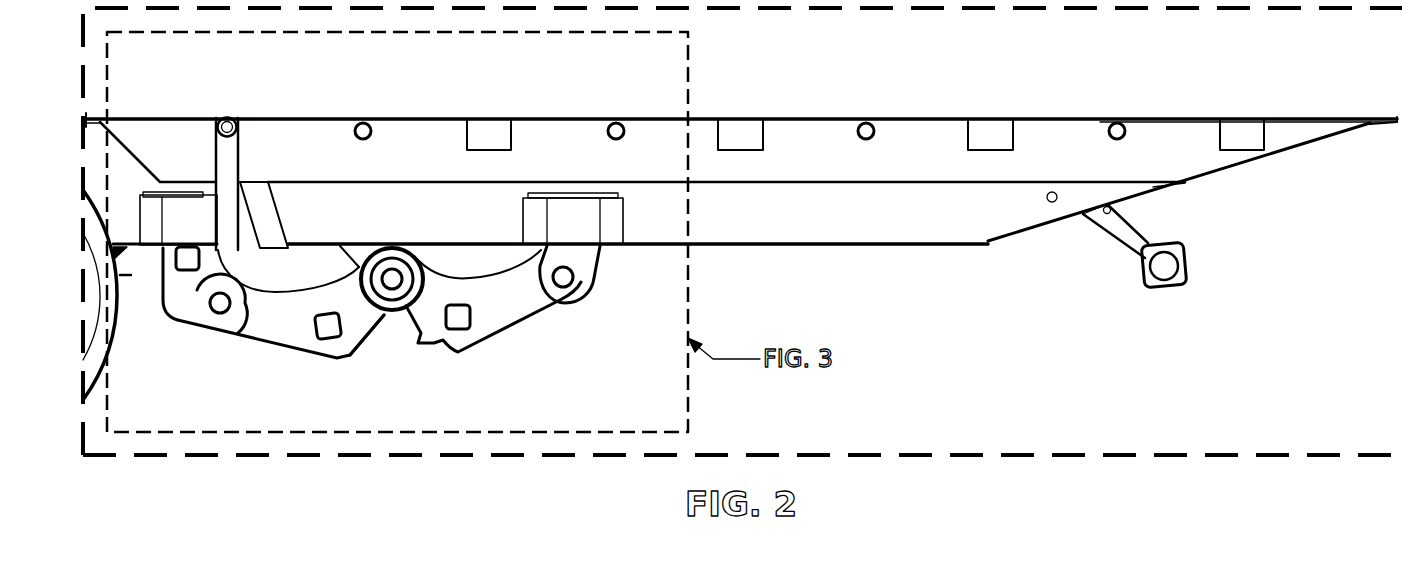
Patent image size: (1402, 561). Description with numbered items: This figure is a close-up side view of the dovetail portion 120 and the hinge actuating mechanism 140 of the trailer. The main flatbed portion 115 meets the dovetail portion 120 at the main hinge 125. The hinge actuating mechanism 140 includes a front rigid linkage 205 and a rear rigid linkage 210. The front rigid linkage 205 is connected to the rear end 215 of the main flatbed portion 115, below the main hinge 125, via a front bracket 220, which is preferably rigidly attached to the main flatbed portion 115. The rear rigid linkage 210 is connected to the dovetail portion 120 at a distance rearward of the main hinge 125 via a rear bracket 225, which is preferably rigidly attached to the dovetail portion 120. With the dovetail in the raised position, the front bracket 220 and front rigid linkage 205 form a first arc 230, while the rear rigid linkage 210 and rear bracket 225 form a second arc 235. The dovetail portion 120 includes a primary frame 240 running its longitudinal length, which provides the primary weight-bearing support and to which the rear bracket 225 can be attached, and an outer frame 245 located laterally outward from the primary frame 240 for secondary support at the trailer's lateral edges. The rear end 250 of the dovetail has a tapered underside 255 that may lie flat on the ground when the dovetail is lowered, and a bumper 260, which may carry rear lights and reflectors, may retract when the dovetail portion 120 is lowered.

The main flatbed portion 115 is at (153, 114).
The rear end of the main flatbed portion 215 is at (205, 114).
The main hinge 125 is at (228, 114).
The second arc 235 is at (298, 281).
The first arc 230 is at (477, 278).
The rear bracket 225 is at (600, 272).
The primary frame 240 is at (748, 248).
The dovetail portion 120 is at (806, 118).
The outer frame 245 is at (937, 126).
The rear end of the dovetail 250 is at (1358, 106).
The tapered underside 255 is at (1246, 197).
The bumper 260 is at (1164, 288).
The front bracket 220 is at (188, 310).
The front rigid linkage 205 is at (274, 332).
The hinge actuating mechanism 140 is at (392, 357).
The rear rigid linkage 210 is at (505, 320).